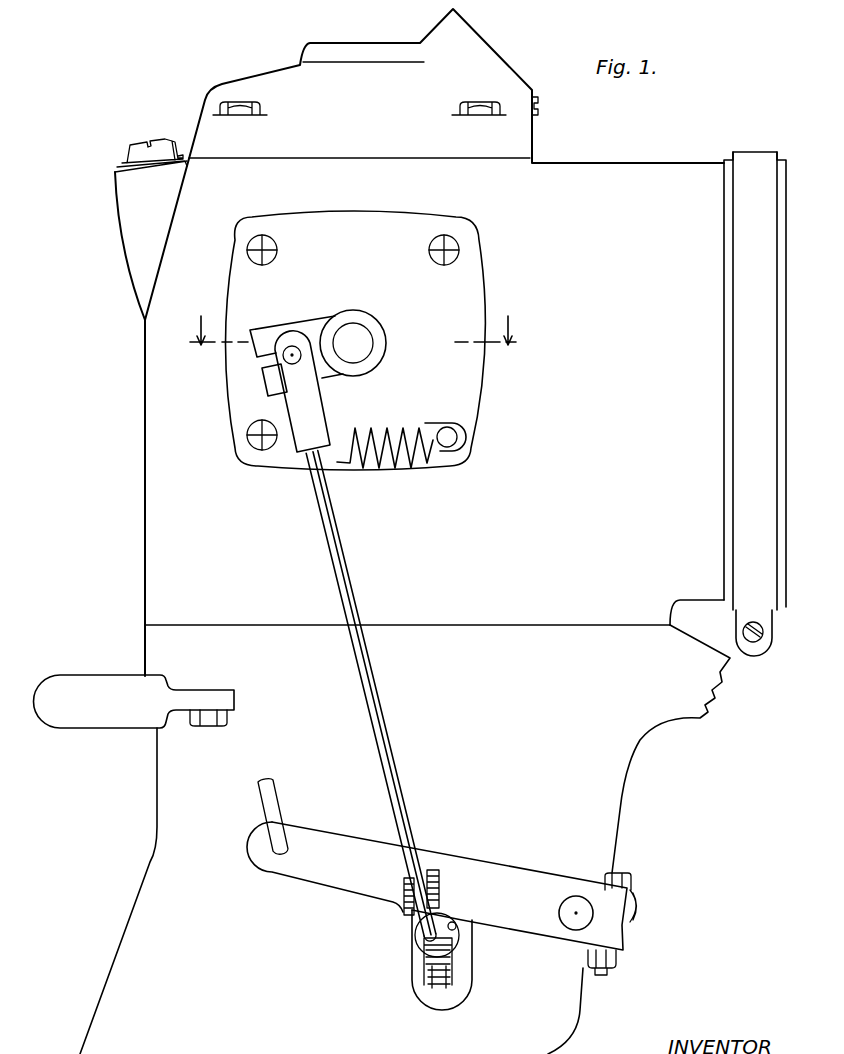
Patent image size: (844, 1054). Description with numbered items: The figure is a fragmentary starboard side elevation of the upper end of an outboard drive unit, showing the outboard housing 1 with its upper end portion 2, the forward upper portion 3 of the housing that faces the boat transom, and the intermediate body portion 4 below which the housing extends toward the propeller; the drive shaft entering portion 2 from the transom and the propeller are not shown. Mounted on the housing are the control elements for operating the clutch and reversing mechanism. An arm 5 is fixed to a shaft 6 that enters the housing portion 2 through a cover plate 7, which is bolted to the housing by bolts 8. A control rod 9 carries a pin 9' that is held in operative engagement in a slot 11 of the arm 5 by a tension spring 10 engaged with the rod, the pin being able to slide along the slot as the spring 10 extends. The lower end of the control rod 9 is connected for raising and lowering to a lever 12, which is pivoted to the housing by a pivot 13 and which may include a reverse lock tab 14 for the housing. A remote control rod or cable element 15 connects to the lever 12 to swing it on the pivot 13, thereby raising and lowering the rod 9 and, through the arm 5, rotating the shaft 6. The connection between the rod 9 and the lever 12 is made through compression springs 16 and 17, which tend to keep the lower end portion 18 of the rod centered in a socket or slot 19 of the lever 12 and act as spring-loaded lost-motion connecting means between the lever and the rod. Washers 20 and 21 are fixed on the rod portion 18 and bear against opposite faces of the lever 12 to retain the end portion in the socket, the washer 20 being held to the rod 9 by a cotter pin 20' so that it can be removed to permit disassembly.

The outboard housing 1 is at (145, 648).
The upper end portion 2 is at (145, 388).
The forward upper portion 3 is at (786, 150).
The intermediate body portion 4 is at (110, 979).
The arm 5 is at (280, 330).
The shaft 6 is at (372, 332).
The cover plate 7 is at (480, 298).
The bolts 8 is at (430, 252).
The control rod 9 is at (355, 636).
The pin 9' is at (300, 340).
The tension spring 10 is at (388, 428).
The slot 11 is at (262, 368).
The lever 12 is at (470, 856).
The pivot 13 is at (570, 898).
The reverse lock tab 14 is at (640, 906).
The remote control rod or cable element 15 is at (276, 797).
The compression spring 16 is at (440, 888).
The compression spring 17 is at (452, 970).
The lower end portion 18 is at (412, 940).
The socket or slot 19 is at (415, 985).
The washer 20 is at (469, 949).
The cotter pin 20' is at (482, 917).
The washer 21 is at (452, 916).